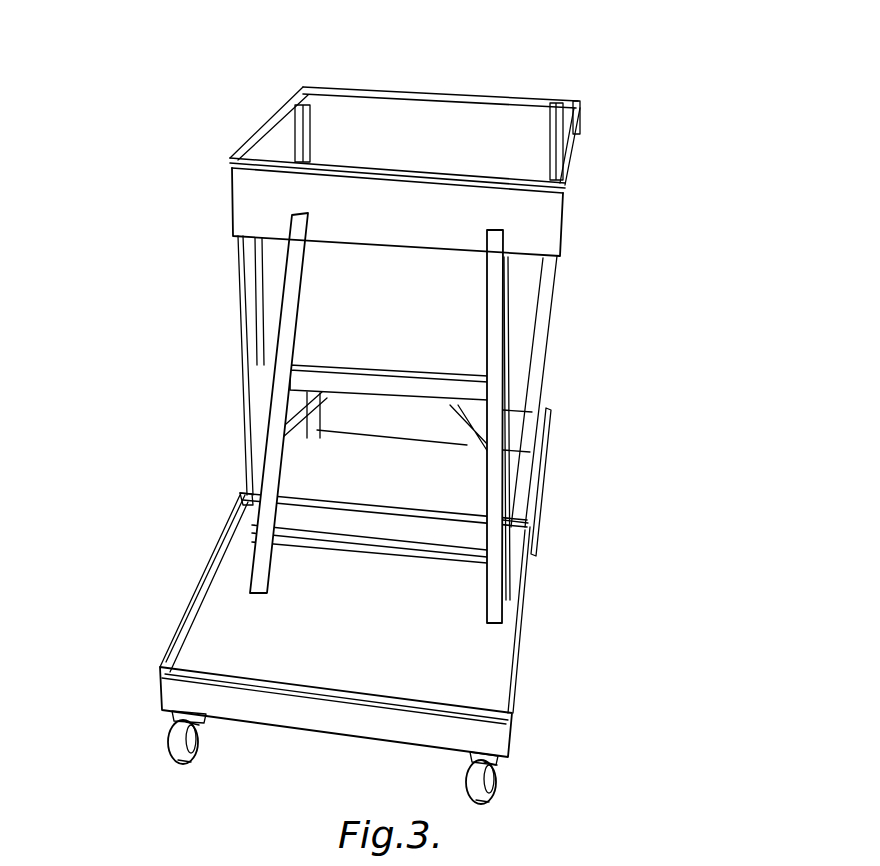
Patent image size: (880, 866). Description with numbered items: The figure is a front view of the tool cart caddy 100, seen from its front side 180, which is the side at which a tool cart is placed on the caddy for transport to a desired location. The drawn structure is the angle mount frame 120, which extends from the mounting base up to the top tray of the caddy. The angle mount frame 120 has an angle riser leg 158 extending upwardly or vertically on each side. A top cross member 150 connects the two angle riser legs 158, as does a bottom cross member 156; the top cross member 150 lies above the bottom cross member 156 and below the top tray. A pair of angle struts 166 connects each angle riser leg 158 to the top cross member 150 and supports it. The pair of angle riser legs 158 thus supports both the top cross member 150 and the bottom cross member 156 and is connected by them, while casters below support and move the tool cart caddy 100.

The tool cart caddy 100 is at (228, 116).
The angle mount frame 120 is at (262, 330).
The top cross member 150 is at (385, 382).
The bottom cross member 156 is at (363, 540).
The angle riser leg 158 is at (292, 282).
The angle strut 166 is at (308, 392).
The front side 180 is at (590, 283).